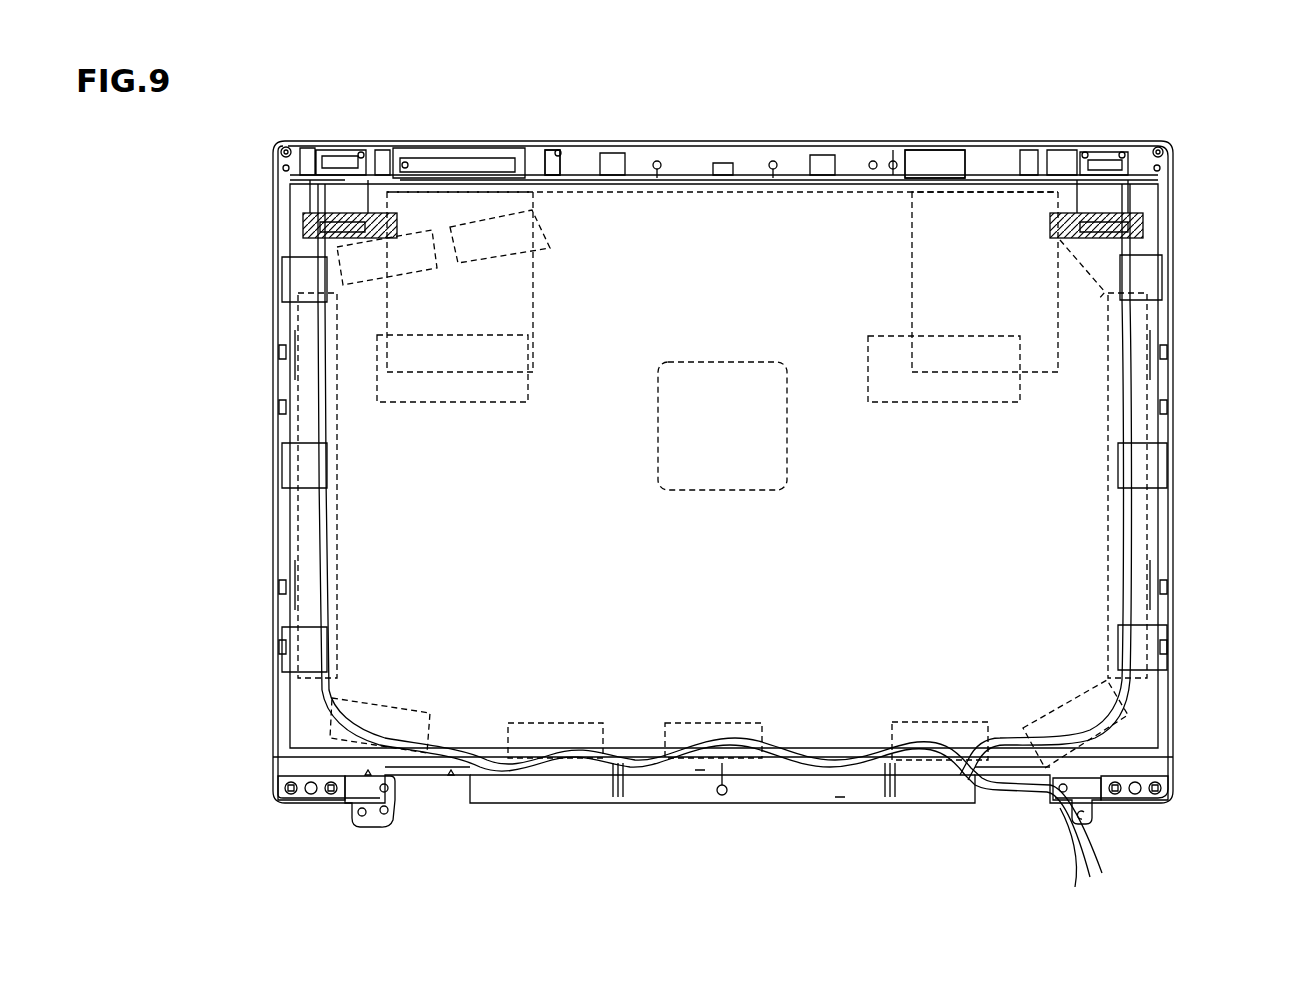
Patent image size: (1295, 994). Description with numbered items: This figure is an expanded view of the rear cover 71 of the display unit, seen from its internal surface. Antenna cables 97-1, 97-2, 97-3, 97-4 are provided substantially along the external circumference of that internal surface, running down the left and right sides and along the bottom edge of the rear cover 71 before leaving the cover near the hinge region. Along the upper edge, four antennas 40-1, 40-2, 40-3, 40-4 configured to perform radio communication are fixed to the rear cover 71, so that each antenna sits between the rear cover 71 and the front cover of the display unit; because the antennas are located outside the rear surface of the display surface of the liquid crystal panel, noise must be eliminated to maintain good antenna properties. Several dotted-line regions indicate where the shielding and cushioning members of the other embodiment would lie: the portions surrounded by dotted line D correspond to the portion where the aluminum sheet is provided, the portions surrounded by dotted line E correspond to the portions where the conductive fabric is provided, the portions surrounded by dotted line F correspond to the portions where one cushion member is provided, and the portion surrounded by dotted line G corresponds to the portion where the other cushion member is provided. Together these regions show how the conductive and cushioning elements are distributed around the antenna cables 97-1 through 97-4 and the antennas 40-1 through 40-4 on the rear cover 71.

The rear cover 71 is at (305, 70).
The antenna 40-1 is at (345, 148).
The antenna 40-2 is at (548, 207).
The antenna 40-3 is at (908, 152).
The antenna 40-4 is at (1138, 213).
The antenna cable 97-1 is at (333, 692).
The antenna cable 97-2 is at (322, 700).
The antenna cable 97-3 is at (1132, 710).
The antenna cable 97-4 is at (1118, 688).
The dotted line G is at (432, 192).
The dotted line D is at (535, 286).
The dotted line E is at (548, 238).
The dotted line F is at (487, 402).